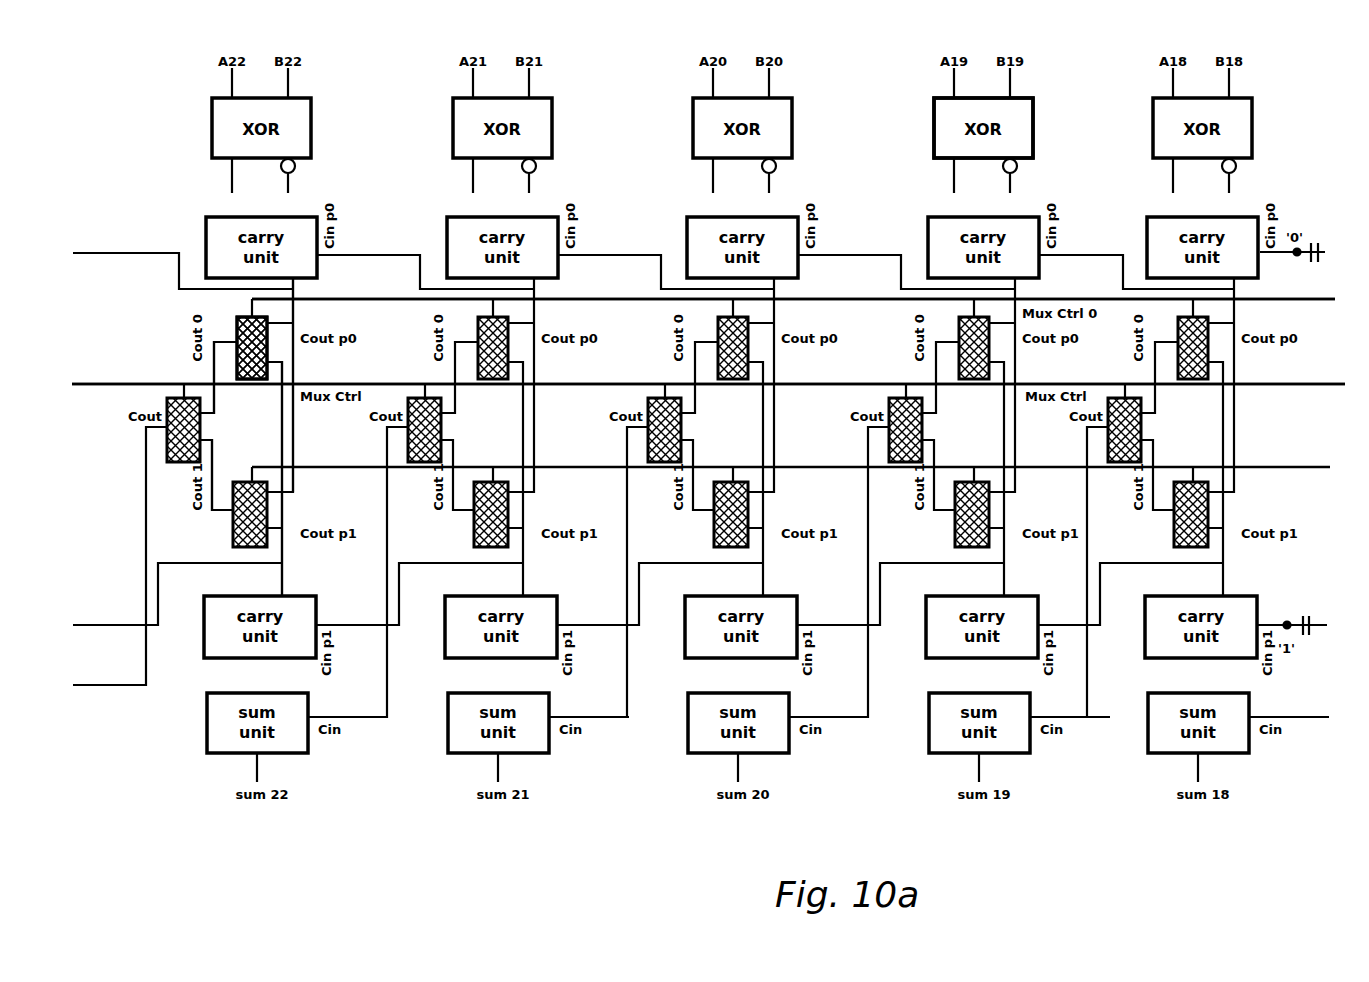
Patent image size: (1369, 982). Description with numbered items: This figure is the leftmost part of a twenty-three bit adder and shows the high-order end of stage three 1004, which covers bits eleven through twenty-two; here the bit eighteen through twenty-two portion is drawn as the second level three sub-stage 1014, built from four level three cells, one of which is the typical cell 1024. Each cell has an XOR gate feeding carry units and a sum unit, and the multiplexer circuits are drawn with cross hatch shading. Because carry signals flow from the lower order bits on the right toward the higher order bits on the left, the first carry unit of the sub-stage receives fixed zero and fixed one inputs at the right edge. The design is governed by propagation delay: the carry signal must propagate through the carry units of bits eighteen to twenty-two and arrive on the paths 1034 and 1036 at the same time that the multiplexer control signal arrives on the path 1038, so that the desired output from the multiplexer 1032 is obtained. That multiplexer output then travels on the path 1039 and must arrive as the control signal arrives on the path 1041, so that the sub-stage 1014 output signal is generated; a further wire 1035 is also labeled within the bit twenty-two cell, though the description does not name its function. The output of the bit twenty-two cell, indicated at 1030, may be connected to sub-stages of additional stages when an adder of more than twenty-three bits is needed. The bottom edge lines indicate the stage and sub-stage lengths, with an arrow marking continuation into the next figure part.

The stage three 1004 is at (1334, 857).
The second level three sub-stage 1014 is at (1318, 823).
The level three cell 1024 is at (1052, 141).
The output of the bit 22 cell 1030 is at (95, 412).
The multiplexer 1032 is at (232, 378).
The carry path 1034 is at (283, 513).
The Cout 1 line 1035 is at (215, 460).
The carry path 1036 is at (295, 308).
The multiplexer control signal path 1038 is at (560, 299).
The multiplexer output path 1039 is at (227, 342).
The multiplexer control signal path 1041 is at (332, 384).